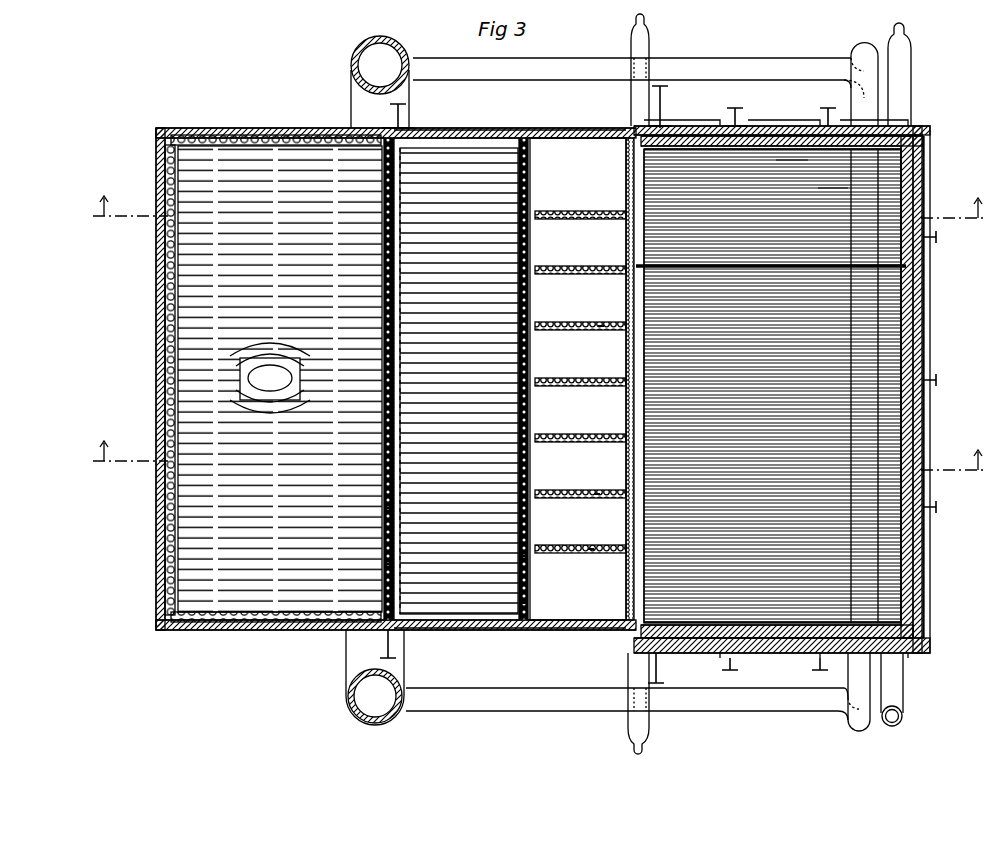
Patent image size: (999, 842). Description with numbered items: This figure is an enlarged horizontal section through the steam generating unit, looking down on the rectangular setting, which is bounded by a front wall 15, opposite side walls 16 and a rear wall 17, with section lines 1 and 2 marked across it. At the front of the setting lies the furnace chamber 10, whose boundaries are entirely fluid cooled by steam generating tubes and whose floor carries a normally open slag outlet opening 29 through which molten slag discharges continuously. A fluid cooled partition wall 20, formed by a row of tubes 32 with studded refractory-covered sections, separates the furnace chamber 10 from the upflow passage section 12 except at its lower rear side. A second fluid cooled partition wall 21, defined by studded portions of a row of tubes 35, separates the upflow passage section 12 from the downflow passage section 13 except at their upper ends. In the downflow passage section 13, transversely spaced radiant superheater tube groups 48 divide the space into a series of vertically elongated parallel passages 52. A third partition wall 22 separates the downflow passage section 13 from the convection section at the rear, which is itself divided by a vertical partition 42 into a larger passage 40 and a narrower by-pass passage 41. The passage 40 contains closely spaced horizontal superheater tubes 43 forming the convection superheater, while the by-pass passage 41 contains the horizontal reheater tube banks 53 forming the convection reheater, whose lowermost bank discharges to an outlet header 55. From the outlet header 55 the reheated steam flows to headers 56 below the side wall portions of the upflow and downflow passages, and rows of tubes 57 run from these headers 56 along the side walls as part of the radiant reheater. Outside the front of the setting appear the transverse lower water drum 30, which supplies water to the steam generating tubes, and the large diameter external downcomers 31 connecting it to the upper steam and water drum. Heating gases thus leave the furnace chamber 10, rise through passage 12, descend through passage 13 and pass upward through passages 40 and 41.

The section line 1- 1 is at (539, 441).
The section line 2- 2 is at (539, 194).
The furnace chamber 10 is at (272, 448).
The upflow passage section 12 is at (456, 509).
The downflow passage section 13 is at (582, 411).
The front wall 15 is at (150, 322).
The side walls 16 is at (510, 130).
The rear wall 17 is at (915, 350).
The partition wall 20 is at (378, 456).
The partition wall 21 is at (510, 538).
The partition wall 22 is at (618, 565).
The slag outlet opening 29 is at (270, 378).
The lower water drum 30 is at (338, 638).
The external downcomers 31 is at (362, 52).
The row of tubes 32 is at (378, 556).
The row of tubes 35 is at (518, 596).
The passage 40 is at (762, 435).
The passage 41 is at (722, 210).
The vertical partition 42 is at (758, 260).
The superheater tubes 43 is at (795, 570).
The tube groups 48 is at (594, 322).
The parallel passages 52 is at (580, 185).
The tube banks 53 is at (810, 180).
The outlet header 55 is at (876, 665).
The headers 56 is at (694, 60).
The rows of tubes 57 is at (467, 130).